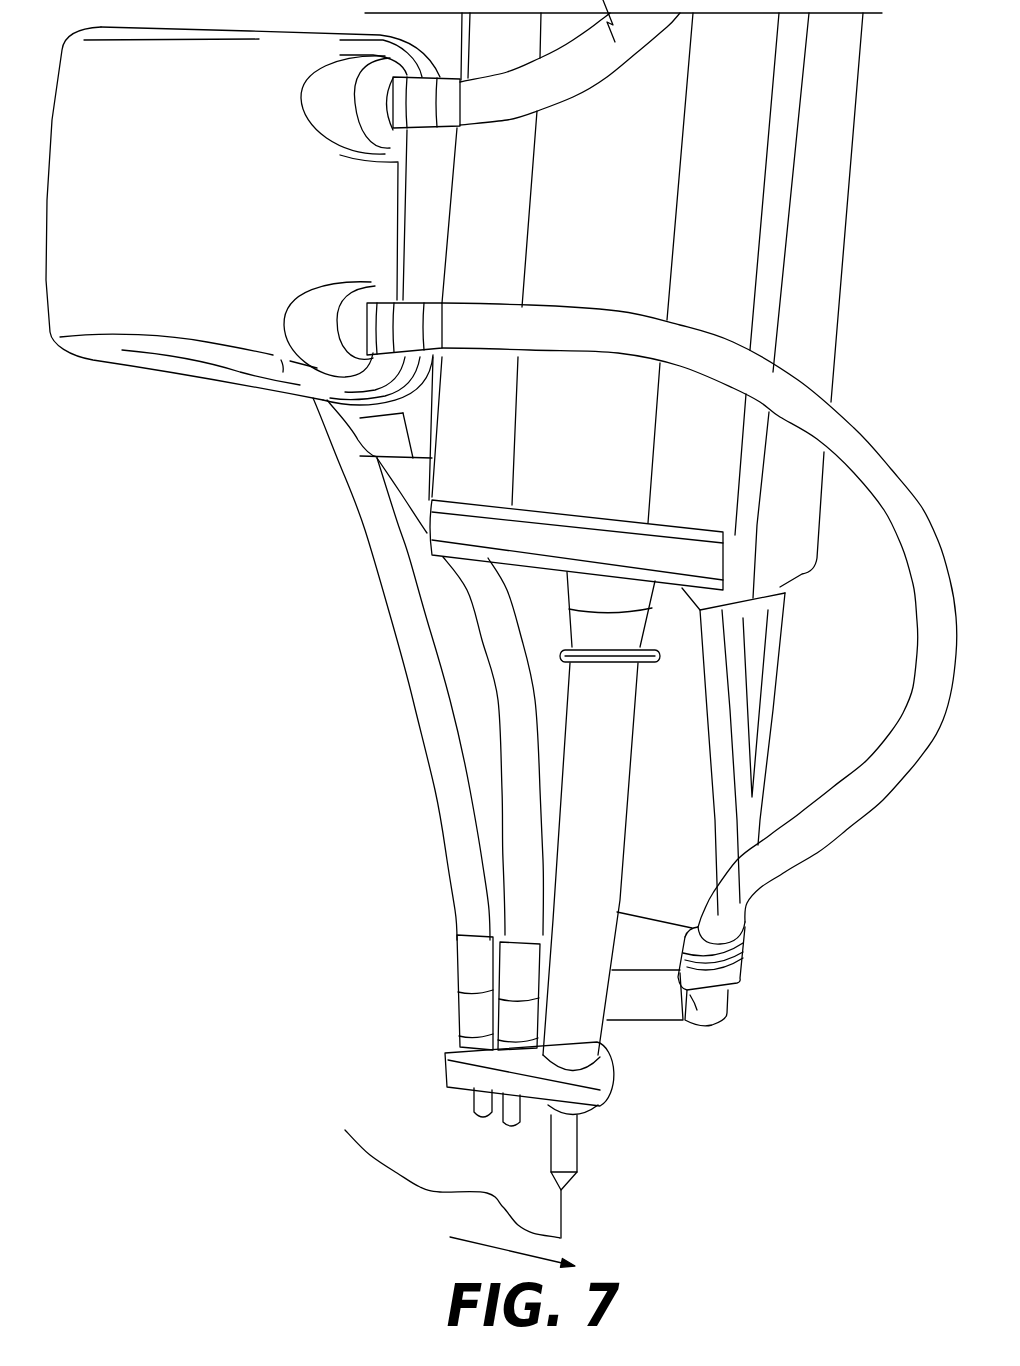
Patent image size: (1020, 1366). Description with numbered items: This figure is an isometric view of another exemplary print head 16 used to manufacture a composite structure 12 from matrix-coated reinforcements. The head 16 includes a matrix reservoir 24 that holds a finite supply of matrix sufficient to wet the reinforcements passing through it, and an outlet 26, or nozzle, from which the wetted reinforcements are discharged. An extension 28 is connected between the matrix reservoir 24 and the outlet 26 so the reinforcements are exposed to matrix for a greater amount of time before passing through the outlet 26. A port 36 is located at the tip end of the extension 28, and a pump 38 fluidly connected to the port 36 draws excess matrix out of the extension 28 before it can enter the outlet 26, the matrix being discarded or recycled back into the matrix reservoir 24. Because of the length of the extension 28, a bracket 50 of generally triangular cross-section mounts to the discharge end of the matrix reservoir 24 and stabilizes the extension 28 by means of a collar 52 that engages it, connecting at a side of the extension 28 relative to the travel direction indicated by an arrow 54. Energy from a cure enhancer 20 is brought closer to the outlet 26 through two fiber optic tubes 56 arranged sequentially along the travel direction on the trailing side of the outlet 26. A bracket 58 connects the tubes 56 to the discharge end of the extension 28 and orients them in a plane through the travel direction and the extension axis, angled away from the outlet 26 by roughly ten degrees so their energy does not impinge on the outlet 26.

The composite structure 12 is at (393, 1167).
The print head 16 is at (247, 667).
The cure enhancer 20 is at (328, 430).
The matrix reservoir 24 is at (859, 139).
The outlet 26 is at (577, 1162).
The extension 28 is at (610, 852).
The port 36 is at (667, 1025).
The pump 38 is at (88, 357).
The bracket 50 is at (770, 738).
The collar 52 is at (617, 665).
The arrow 54 is at (455, 1247).
The fiber optic tube 56 is at (480, 1120).
The bracket 58 is at (502, 1083).